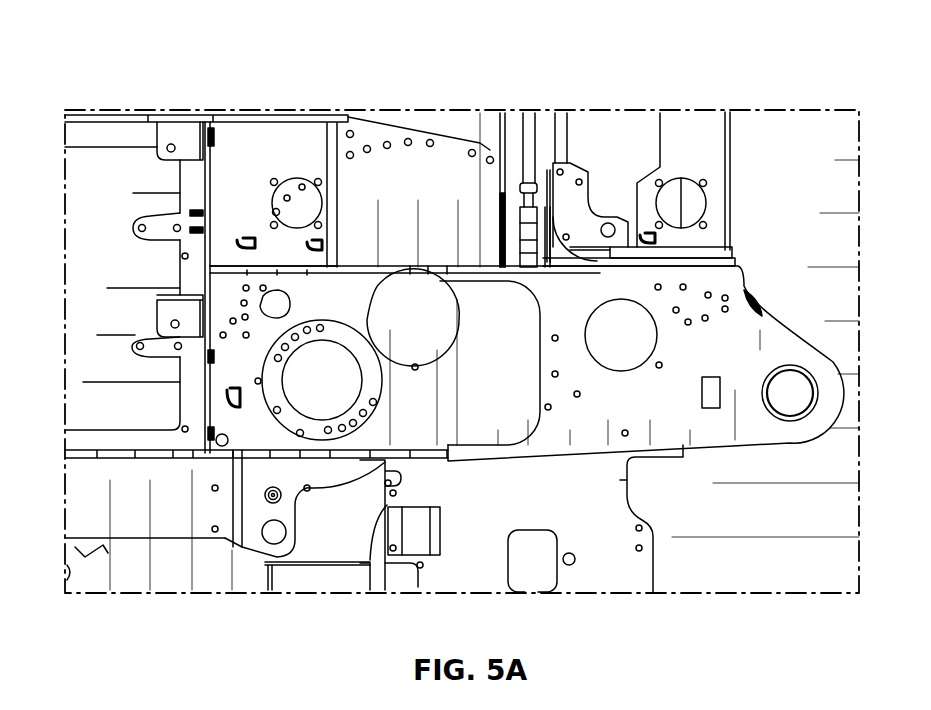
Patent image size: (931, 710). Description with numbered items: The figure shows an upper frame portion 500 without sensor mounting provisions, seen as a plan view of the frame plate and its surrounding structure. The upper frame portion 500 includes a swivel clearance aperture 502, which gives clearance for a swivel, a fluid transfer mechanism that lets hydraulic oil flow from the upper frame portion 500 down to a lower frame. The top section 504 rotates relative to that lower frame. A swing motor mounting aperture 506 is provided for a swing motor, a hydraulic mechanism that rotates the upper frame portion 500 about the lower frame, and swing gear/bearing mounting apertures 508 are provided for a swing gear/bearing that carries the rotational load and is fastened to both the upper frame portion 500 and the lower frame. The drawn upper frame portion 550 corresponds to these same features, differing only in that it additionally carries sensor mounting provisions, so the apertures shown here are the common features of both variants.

The upper frame portion 500 is at (118, 52).
The swivel clearance aperture 502 is at (400, 313).
The top section 504 is at (493, 187).
The swing motor mounting aperture 506 is at (317, 380).
The swing gear/bearing mounting apertures 508 is at (295, 203).
The upper frame portion 550 is at (530, 300).